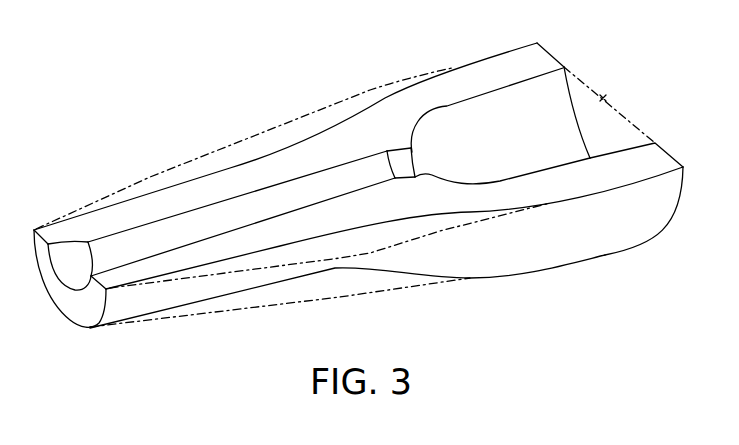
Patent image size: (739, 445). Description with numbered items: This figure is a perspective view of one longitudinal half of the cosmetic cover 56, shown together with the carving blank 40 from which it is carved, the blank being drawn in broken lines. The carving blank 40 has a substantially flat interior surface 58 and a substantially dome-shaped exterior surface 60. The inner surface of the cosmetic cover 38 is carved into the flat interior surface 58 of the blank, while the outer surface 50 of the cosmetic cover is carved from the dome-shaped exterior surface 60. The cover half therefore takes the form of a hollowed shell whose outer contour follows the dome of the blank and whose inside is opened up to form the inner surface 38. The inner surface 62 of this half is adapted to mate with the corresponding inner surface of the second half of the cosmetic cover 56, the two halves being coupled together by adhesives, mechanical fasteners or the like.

The inner surface of the cosmetic cover 38 is at (432, 127).
The carving blank 40 is at (215, 152).
The outer surface of the cosmetic cover 50 is at (322, 272).
The cosmetic cover 56 is at (103, 161).
The interior surface 58 is at (612, 95).
The exterior surface 60 is at (420, 285).
The inner surface 62 is at (113, 278).